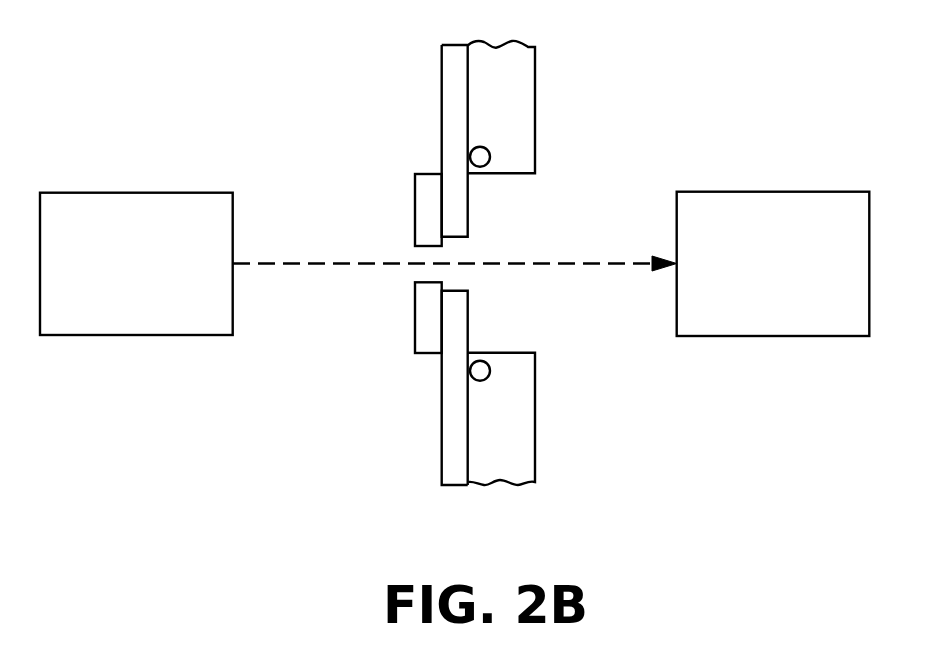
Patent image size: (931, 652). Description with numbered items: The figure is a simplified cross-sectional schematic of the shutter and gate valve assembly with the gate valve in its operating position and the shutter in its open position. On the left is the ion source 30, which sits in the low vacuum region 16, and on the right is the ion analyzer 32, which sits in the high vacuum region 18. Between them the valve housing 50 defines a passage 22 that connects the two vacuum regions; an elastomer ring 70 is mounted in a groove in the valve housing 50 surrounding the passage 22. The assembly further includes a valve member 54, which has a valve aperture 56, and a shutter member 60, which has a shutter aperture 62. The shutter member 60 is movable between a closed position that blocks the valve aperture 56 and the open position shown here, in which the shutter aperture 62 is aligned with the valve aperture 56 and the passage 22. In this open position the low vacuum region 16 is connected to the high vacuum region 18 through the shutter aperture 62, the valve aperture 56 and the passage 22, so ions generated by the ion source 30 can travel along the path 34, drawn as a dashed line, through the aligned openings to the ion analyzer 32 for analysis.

The low vacuum region 16 is at (392, 113).
The high vacuum region 18 is at (685, 112).
The passage 22 is at (503, 205).
The ion source 30 is at (118, 193).
The ion analyzer 32 is at (757, 192).
The path 34 is at (297, 264).
The valve housing 50 is at (535, 68).
The valve member 54 is at (423, 428).
The valve aperture 56 is at (455, 282).
The shutter member 60 is at (415, 213).
The shutter aperture 62 is at (423, 272).
The elastomer ring 70 is at (490, 157).